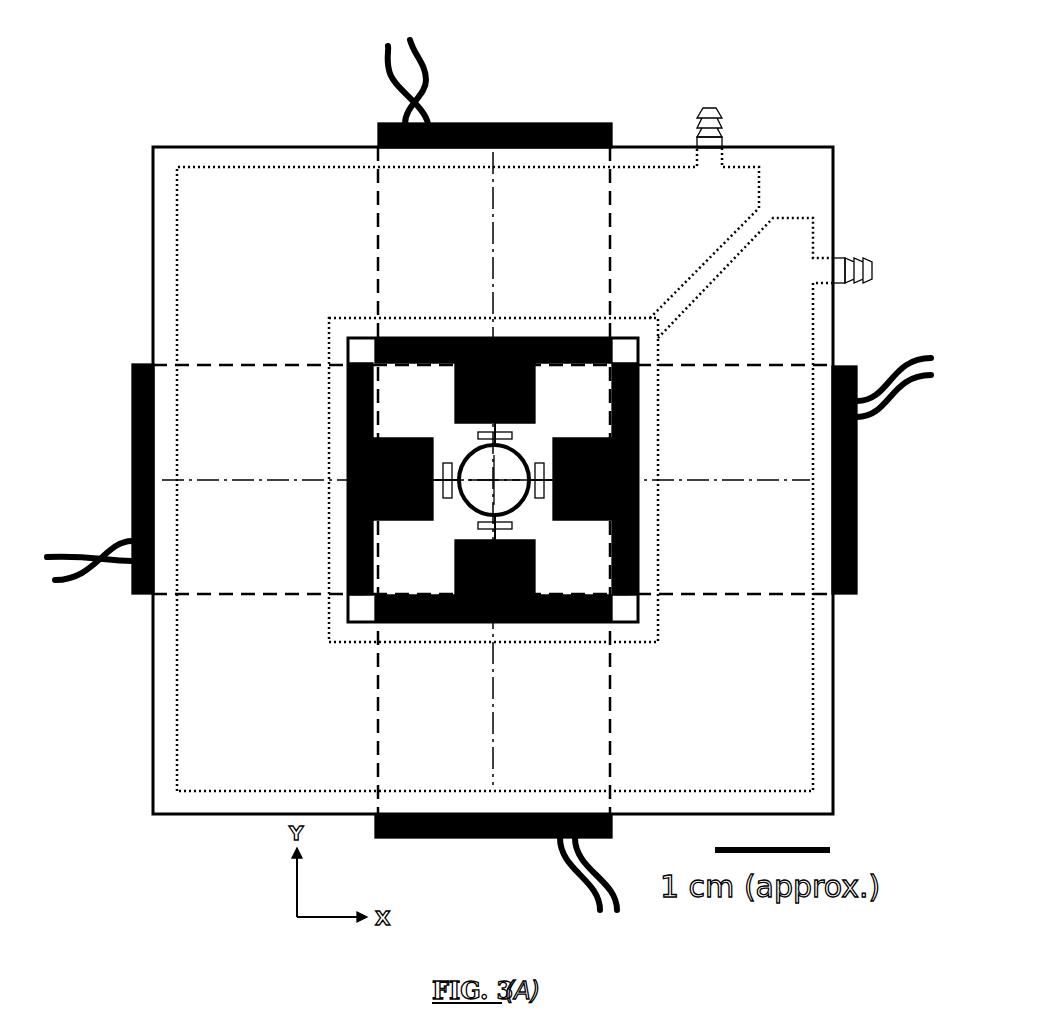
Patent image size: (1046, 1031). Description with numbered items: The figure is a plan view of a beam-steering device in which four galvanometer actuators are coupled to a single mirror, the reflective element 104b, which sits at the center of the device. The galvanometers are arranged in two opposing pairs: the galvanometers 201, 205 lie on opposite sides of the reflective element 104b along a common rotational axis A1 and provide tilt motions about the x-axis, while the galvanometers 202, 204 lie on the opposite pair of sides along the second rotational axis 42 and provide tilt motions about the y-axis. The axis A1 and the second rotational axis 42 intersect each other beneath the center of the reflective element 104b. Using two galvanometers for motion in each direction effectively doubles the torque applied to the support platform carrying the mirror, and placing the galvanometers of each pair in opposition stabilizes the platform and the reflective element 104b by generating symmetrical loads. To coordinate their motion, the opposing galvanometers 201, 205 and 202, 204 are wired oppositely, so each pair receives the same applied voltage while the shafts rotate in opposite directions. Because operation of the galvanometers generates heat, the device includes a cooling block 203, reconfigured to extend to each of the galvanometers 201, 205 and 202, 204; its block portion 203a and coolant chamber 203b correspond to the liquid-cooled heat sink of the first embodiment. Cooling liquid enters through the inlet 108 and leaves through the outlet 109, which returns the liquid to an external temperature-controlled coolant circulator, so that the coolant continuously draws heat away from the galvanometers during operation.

The galvanometer 201 is at (462, 838).
The galvanometer 202 is at (845, 594).
The galvanometer 204 is at (142, 595).
The galvanometer 205 is at (503, 123).
The cooling block 203 is at (836, 733).
The first region of substrate 203a is at (811, 761).
The second region of substrate 203b is at (790, 676).
The inlet 108 is at (722, 118).
The outlet 109 is at (858, 285).
The reflective element 104b is at (522, 508).
The second rotational axis 42 is at (688, 483).
The first rotational axis A1 is at (492, 671).